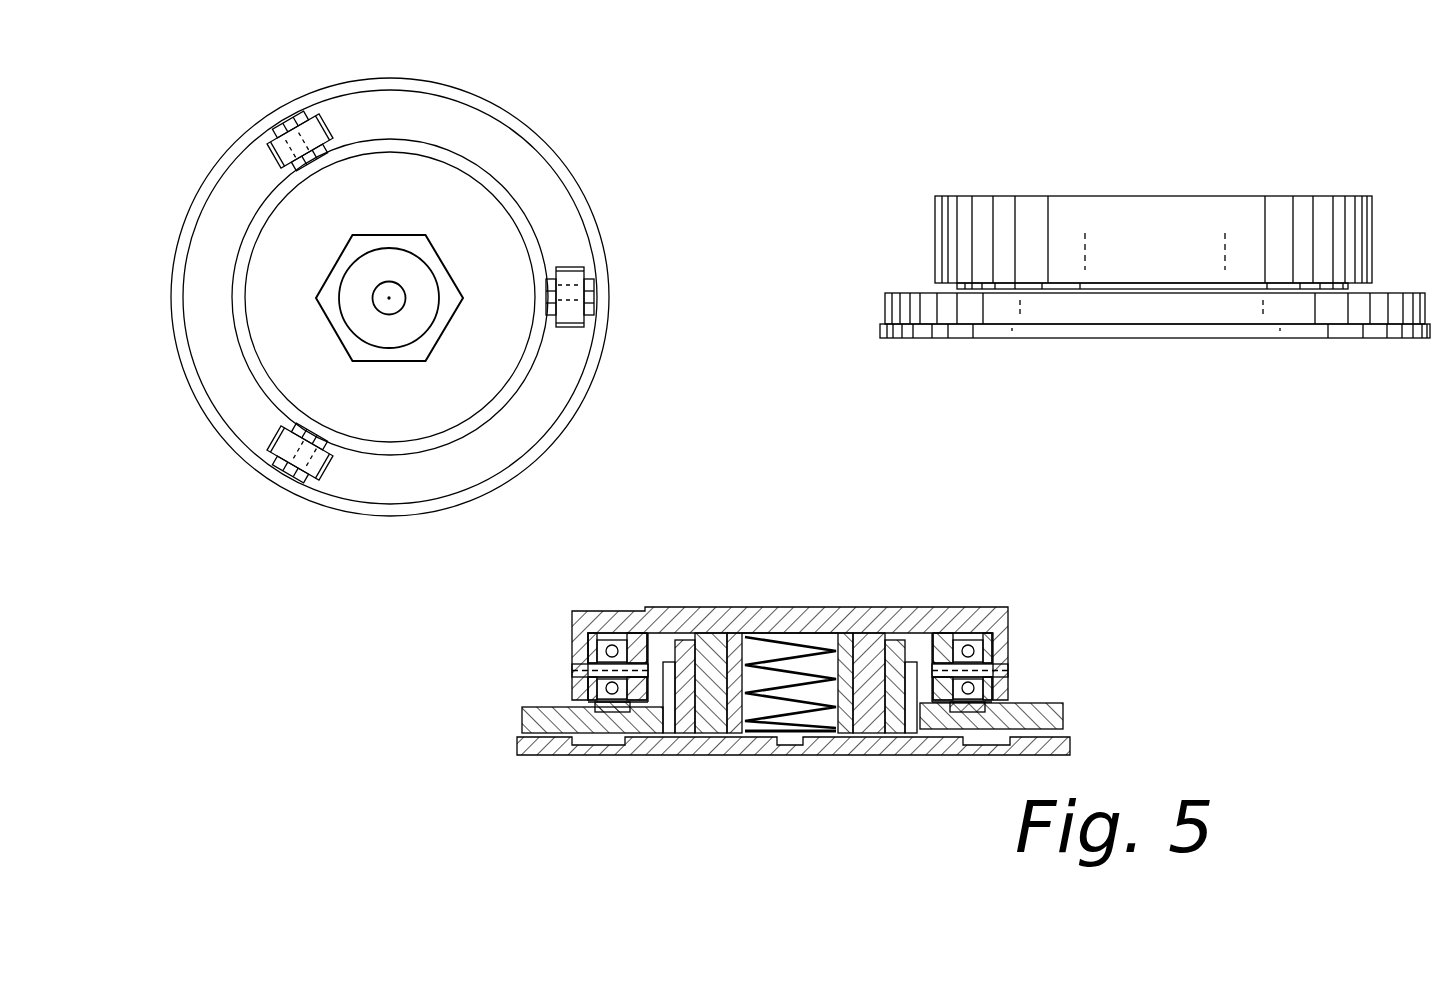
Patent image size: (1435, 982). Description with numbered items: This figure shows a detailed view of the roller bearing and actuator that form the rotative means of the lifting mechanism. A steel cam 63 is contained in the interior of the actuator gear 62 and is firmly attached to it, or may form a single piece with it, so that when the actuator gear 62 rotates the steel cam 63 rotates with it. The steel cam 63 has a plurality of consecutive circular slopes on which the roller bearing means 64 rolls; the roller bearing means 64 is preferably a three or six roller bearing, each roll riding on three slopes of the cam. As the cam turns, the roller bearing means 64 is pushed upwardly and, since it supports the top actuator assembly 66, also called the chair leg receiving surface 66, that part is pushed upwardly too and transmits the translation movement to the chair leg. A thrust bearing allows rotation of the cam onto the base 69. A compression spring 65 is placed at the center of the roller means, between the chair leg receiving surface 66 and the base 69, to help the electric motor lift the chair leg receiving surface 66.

The actuator gear 62 is at (538, 718).
The steel cam 63 is at (995, 708).
The roller bearing means 64 is at (290, 138).
The compression spring 65 is at (793, 658).
The top actuator assembly 66 is at (1143, 196).
The base 69 is at (720, 743).